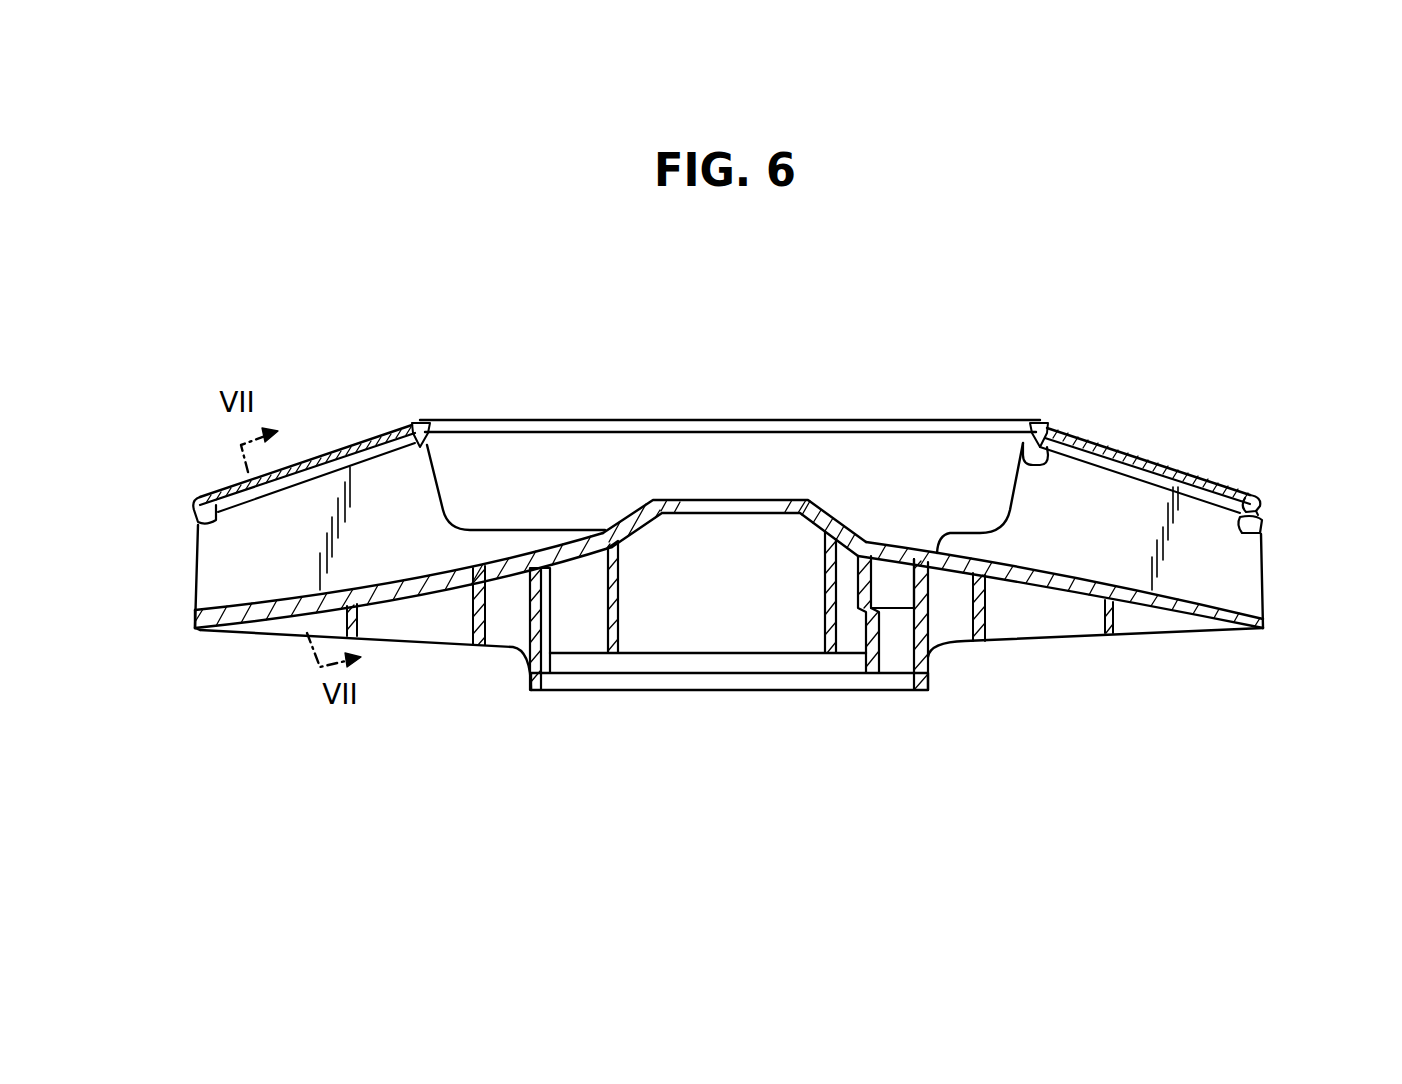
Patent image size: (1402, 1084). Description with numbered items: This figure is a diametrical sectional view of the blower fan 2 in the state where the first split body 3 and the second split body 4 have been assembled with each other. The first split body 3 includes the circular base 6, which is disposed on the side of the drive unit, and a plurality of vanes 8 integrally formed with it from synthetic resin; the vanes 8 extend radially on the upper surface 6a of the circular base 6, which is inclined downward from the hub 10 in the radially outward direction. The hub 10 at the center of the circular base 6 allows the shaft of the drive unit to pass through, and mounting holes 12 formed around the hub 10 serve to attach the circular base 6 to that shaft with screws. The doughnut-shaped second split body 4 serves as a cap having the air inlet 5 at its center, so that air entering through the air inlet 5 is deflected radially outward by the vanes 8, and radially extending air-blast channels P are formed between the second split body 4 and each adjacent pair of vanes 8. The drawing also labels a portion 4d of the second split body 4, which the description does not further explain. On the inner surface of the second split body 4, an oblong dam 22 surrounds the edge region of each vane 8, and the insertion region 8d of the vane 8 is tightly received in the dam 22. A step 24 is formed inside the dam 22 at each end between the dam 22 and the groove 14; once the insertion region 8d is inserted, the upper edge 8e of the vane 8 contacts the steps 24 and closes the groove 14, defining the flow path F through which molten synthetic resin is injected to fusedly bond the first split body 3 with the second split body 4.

The blower fan 2 is at (642, 410).
The first split body 3 is at (1160, 608).
The second split body 4 is at (1250, 491).
The outer surface of flange 4d is at (1226, 486).
The air inlet 5 is at (678, 450).
The circular base 6 is at (1057, 582).
The upper surface 6a is at (468, 562).
The vane 8 is at (407, 493).
The insertion region 8d is at (313, 507).
The upper edge 8e is at (307, 460).
The hub 10 is at (737, 505).
The mounting holes 12 is at (878, 640).
The groove 14 is at (1207, 507).
The dam 22 is at (1257, 511).
The step 24 is at (1020, 450).
The flow path F is at (362, 445).
The air-blast channel P is at (228, 570).